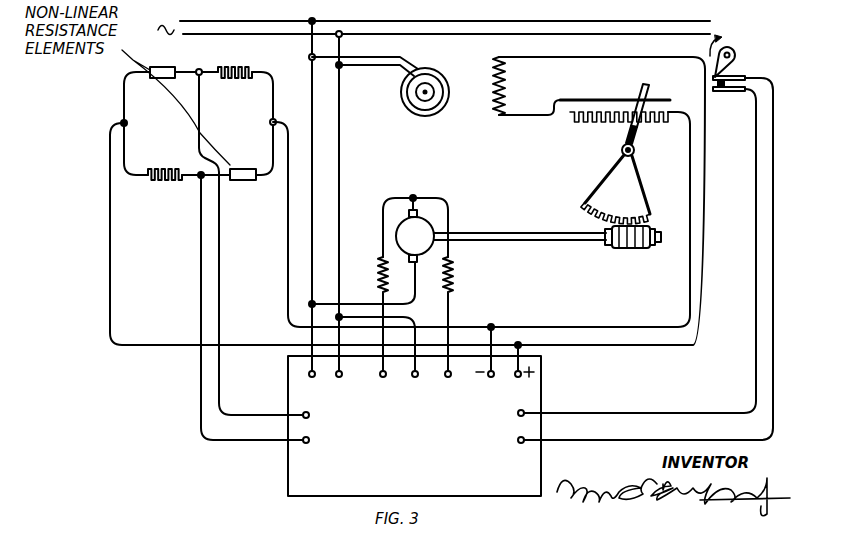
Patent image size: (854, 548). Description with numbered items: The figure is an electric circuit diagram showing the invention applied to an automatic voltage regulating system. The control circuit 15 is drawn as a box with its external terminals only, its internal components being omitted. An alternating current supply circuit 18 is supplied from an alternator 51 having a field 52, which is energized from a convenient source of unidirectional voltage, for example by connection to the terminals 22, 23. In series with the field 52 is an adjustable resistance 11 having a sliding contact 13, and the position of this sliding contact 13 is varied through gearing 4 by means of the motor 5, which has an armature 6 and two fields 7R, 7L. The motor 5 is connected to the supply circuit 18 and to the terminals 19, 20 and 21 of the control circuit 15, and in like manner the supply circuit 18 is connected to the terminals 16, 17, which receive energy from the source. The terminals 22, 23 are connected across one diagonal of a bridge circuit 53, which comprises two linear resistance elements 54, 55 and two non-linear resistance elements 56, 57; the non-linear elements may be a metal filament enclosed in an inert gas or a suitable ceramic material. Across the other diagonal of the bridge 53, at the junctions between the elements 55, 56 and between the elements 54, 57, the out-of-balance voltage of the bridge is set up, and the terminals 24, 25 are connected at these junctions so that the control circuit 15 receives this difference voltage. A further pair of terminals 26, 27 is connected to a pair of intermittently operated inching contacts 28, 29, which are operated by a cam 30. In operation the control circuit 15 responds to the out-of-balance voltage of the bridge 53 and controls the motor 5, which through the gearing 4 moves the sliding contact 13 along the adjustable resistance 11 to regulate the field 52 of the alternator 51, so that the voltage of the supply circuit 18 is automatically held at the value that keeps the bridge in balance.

The alternating current supply circuit 18 is at (203, 30).
The bridge circuit 53 is at (246, 126).
The non-linear resistance element 56 is at (163, 61).
The linear resistance element 55 is at (235, 61).
The linear resistance element 54 is at (165, 186).
The non-linear resistance element 57 is at (243, 186).
The alternator 51 is at (421, 69).
The field 52 is at (506, 83).
The adjustable resistance 11 is at (658, 121).
The sliding contact 13 is at (647, 89).
The cam 30 is at (737, 52).
The intermittently operated contact 28 is at (740, 77).
The intermittently operated contact 29 is at (716, 92).
The motor 5 is at (395, 275).
The armature 6 is at (436, 228).
The field 7R is at (370, 315).
The field 7L is at (459, 315).
The gearing 4 is at (634, 245).
The control circuit 15 is at (414, 434).
The terminal 16 is at (313, 385).
The terminal 17 is at (341, 385).
The terminal 19 is at (386, 385).
The terminal 20 is at (414, 385).
The terminal 21 is at (450, 385).
The terminal 22 is at (488, 385).
The terminal 23 is at (521, 383).
The terminal 24 is at (317, 416).
The terminal 25 is at (317, 441).
The terminal 26 is at (508, 414).
The terminal 27 is at (508, 441).